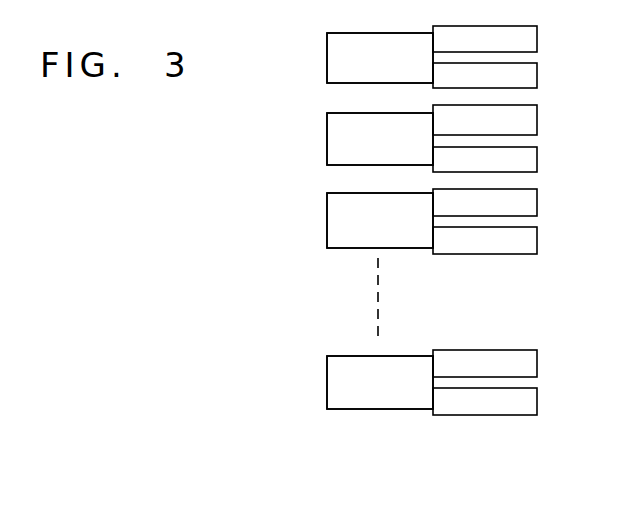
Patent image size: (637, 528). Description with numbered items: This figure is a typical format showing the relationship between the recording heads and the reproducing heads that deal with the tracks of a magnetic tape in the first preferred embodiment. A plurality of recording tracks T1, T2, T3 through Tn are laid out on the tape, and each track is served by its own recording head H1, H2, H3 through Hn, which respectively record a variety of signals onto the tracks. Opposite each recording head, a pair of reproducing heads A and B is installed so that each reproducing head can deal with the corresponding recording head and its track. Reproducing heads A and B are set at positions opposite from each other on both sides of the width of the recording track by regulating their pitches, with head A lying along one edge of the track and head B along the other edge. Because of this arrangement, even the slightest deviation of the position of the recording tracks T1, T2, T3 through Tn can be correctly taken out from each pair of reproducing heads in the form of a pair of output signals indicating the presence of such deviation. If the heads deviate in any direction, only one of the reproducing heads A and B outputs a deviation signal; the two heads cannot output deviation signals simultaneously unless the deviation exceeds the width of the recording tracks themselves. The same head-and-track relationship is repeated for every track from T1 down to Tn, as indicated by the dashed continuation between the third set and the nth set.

The recording track T1 is at (354, 58).
The recording track T2 is at (354, 139).
The recording track T3 is at (354, 220).
The recording track Tn is at (354, 382).
The recording head H1 is at (380, 58).
The recording head H2 is at (380, 139).
The recording head H3 is at (380, 220).
The recording head Hn is at (380, 382).
The reproducing head A is at (497, 202).
The reproducing head B is at (497, 240).